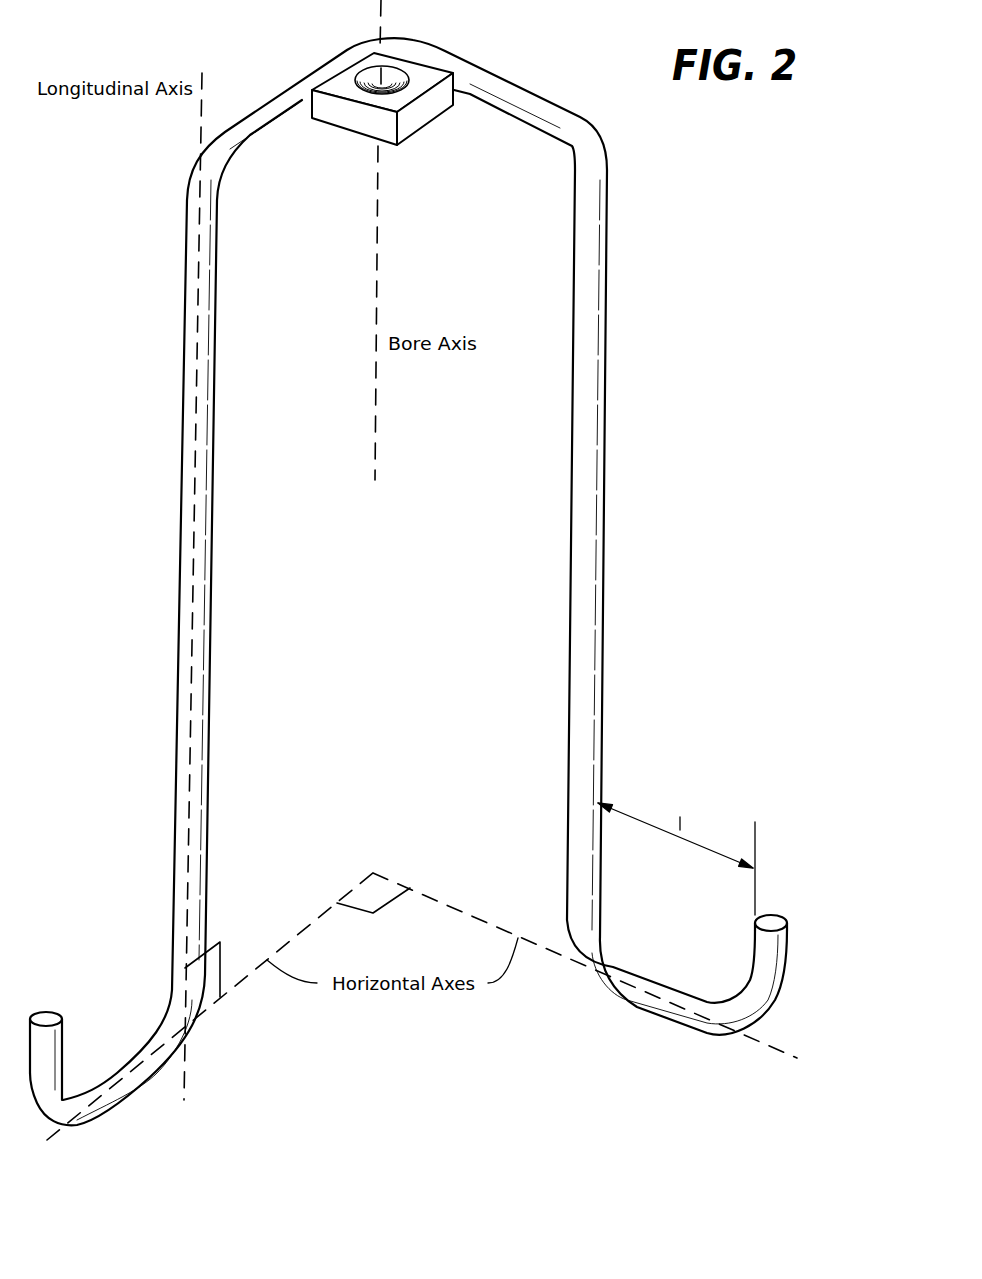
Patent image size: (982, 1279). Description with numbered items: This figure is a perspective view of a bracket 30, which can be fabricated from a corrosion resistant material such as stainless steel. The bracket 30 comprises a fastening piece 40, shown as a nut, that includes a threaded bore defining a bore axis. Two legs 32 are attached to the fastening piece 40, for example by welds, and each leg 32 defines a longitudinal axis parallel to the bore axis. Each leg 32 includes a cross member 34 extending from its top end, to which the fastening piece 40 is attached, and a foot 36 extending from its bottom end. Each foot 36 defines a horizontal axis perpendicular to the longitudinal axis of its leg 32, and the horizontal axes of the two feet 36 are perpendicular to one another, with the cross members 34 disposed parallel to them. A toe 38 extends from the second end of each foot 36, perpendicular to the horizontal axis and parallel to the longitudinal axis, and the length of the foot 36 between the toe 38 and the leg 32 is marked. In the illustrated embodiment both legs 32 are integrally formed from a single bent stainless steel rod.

The bracket 30 is at (672, 158).
The leg 32 is at (605, 408).
The cross member 34 is at (497, 83).
The foot 36 is at (660, 1022).
The toe 38 is at (753, 938).
The fastening piece 40 is at (342, 90).